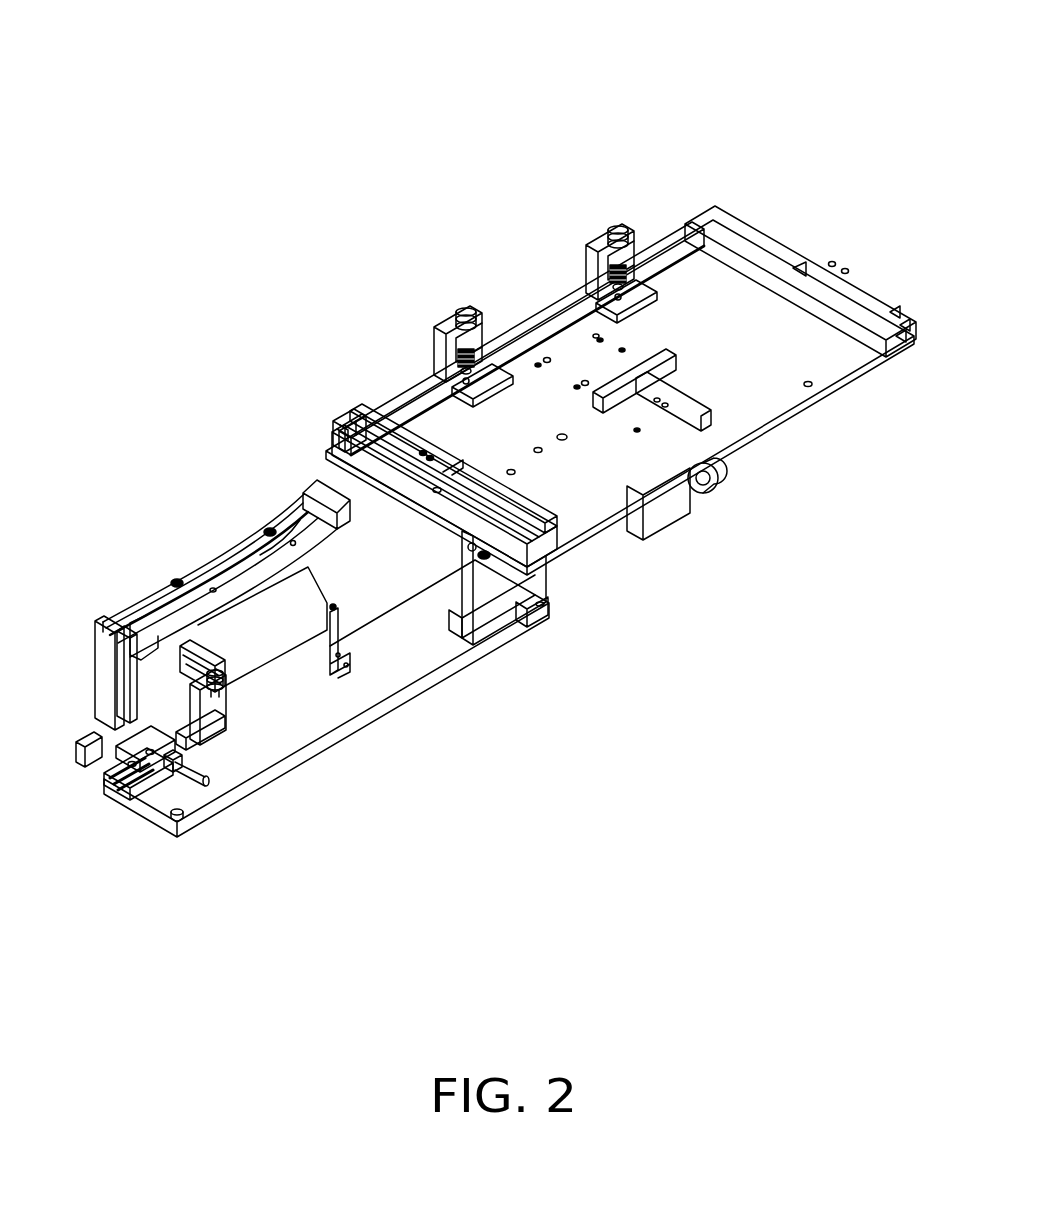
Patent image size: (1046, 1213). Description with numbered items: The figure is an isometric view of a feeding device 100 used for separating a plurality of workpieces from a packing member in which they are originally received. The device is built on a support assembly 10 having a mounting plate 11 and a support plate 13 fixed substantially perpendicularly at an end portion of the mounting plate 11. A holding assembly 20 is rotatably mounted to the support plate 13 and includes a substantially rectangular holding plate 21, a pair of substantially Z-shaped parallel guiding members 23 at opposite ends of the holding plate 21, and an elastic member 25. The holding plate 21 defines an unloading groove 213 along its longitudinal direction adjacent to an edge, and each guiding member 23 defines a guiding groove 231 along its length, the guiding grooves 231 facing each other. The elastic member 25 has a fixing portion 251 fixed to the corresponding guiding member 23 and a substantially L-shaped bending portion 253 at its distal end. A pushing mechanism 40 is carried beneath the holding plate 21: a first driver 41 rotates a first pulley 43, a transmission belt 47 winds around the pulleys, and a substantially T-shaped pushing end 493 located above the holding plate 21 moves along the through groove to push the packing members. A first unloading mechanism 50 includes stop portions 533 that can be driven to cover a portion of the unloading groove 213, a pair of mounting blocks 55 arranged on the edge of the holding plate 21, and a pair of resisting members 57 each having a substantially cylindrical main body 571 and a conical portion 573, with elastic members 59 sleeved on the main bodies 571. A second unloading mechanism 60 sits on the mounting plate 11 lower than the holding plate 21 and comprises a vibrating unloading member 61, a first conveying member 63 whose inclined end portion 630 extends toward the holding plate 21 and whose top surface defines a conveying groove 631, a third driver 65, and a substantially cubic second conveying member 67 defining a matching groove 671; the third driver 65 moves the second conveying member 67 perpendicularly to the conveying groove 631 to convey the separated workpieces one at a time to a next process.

The feeding device 100 is at (554, 34).
The support assembly 10 is at (567, 700).
The mounting plate 11 is at (435, 683).
The support plate 13 is at (500, 607).
The holding assembly 20 is at (812, 409).
The holding plate 21 is at (732, 275).
The unloading groove 213 is at (703, 247).
The guiding members 23 is at (778, 253).
The guiding groove 231 is at (900, 342).
The elastic member 25 is at (308, 341).
The fixing portion 251 is at (382, 422).
The bending portion 253 is at (337, 440).
The pushing mechanism 40 is at (653, 532).
The first driver 41 is at (630, 523).
The first pulley 43 is at (698, 485).
The transmission belt 47 is at (717, 480).
The pushing end 493 is at (676, 400).
The first unloading mechanism 50 is at (433, 346).
The stop portions 533 is at (588, 265).
The mounting blocks 55 is at (453, 343).
The resisting members 57 is at (554, 242).
The main body 571 is at (466, 314).
The conical portion 573 is at (478, 362).
The elastic members 59 is at (636, 268).
The second unloading mechanism 60 is at (223, 444).
The unloading member 61 is at (290, 603).
The first conveying member 63 is at (203, 573).
The end portion 630 is at (350, 513).
The conveying groove 631 is at (283, 527).
The third driver 65 is at (143, 743).
The second conveying member 67 is at (98, 632).
The matching groove 671 is at (118, 634).